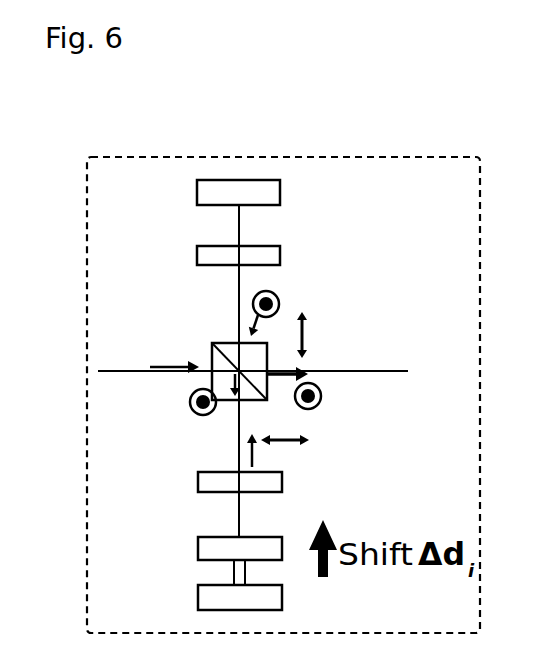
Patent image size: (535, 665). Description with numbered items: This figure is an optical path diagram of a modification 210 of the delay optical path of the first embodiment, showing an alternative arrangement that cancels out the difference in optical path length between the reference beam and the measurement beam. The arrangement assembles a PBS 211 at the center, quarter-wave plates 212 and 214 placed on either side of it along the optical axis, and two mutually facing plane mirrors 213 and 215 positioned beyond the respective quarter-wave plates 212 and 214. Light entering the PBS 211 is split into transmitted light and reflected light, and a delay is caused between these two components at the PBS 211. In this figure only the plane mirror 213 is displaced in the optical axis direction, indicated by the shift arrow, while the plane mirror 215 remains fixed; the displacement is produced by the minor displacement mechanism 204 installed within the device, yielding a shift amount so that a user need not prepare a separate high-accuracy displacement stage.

The modification 210 is at (81, 156).
The plane mirror 215 is at (197, 195).
The λ/4 plate 214 is at (197, 257).
The PBS 211 is at (212, 358).
The λ/4 plate 212 is at (200, 484).
The plane mirror 213 is at (200, 549).
The minor displacement mechanism 204 is at (200, 597).